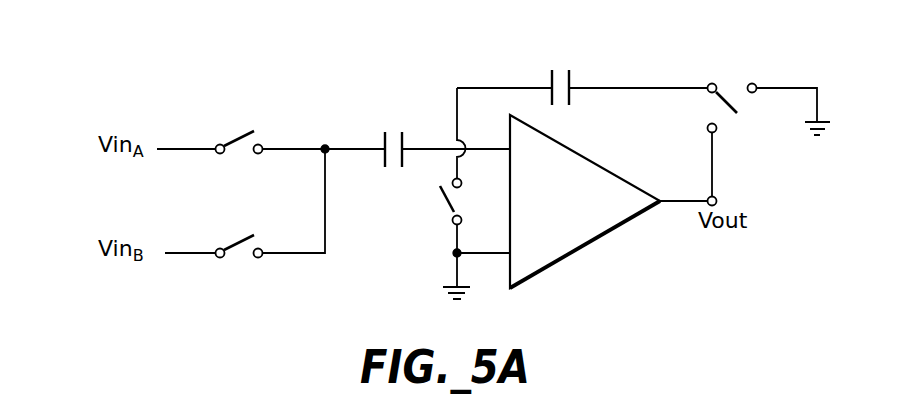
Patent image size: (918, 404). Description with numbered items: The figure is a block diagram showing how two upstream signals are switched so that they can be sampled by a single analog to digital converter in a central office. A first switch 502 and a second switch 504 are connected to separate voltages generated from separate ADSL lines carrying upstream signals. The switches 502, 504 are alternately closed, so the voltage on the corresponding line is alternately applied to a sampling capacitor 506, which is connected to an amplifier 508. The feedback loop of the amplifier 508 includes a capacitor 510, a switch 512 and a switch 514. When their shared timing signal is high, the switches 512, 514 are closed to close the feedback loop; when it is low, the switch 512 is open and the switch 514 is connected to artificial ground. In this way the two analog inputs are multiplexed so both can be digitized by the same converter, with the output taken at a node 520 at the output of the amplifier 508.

The first switch 502 is at (236, 129).
The second switch 504 is at (236, 234).
The sampling capacitor 506 is at (381, 122).
The amplifier 508 is at (584, 155).
The capacitor 510 is at (593, 46).
The switch 512 is at (428, 192).
The switch 514 is at (733, 77).
The node 520 is at (718, 198).